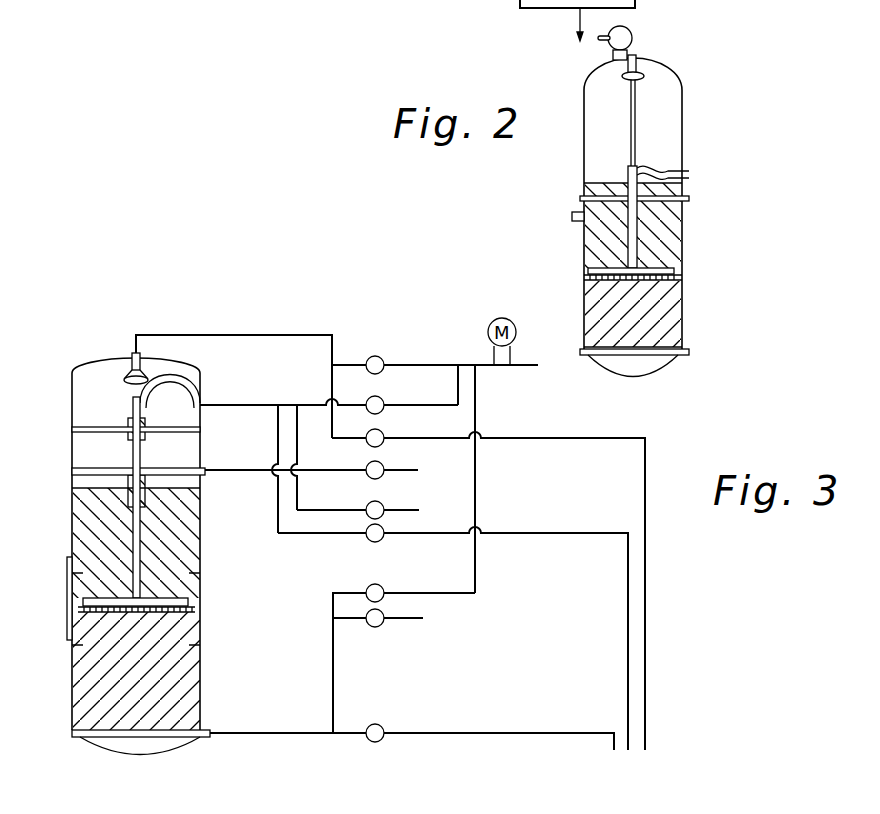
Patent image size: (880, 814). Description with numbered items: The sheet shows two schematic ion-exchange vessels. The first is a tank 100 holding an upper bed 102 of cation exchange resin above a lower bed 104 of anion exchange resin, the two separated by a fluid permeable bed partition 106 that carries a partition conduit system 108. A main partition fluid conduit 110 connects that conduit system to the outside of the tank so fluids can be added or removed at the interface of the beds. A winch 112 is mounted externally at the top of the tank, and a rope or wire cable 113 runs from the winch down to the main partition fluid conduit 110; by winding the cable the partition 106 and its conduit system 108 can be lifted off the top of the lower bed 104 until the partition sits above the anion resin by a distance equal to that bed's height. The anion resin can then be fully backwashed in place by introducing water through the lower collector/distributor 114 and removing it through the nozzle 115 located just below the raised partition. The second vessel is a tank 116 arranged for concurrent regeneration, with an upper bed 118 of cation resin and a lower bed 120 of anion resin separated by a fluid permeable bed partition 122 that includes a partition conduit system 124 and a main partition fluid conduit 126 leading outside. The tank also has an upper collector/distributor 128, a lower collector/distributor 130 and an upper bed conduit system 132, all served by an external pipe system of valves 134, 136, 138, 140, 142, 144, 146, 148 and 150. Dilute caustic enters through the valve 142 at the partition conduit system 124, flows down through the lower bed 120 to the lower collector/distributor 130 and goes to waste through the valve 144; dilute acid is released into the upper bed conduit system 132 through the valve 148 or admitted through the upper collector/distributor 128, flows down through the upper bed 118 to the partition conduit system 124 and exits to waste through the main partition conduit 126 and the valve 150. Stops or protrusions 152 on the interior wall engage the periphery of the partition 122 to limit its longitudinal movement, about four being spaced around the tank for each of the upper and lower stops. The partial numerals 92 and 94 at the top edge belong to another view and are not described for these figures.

In FIG. 2, the element 92 is at (334, 9).
In FIG. 2, the element 94 is at (378, 3).
In FIG. 2, the tank 100 is at (584, 143).
In FIG. 2, the upper bed 102 is at (595, 248).
In FIG. 2, the lower bed 104 is at (673, 327).
In FIG. 2, the fluid permeable bed partition 106 is at (662, 282).
In FIG. 2, the partition conduit system 108 is at (668, 267).
In FIG. 2, the main partition fluid conduit 110 is at (637, 232).
In FIG. 2, the winch 112 is at (630, 33).
In FIG. 2, the rope or wire cable 113 is at (636, 48).
In FIG. 2, the lower collector/distributor 114 is at (629, 357).
In FIG. 2, the nozzle 115 is at (572, 217).
In FIG. 3, the tank 116 is at (72, 440).
In FIG. 3, the upper bed 118 is at (80, 534).
In FIG. 3, the lower bed 120 is at (88, 708).
In FIG. 3, the fluid permeable bed partition 122 is at (148, 613).
In FIG. 3, the partition conduit system 124 is at (153, 598).
In FIG. 3, the main partition fluid conduit 126 is at (140, 543).
In FIG. 3, the upper collector/distributor 128 is at (131, 356).
In FIG. 3, the lower collector/distributor 130 is at (148, 738).
In FIG. 3, the upper bed conduit system 132 is at (172, 468).
In FIG. 3, the valve 134 is at (382, 358).
In FIG. 3, the valve 136 is at (380, 627).
In FIG. 3, the valve 138 is at (370, 586).
In FIG. 3, the valve 140 is at (382, 431).
In FIG. 3, the valve 142 is at (382, 503).
In FIG. 3, the valve 144 is at (382, 725).
In FIG. 3, the valve 146 is at (382, 398).
In FIG. 3, the valve 148 is at (382, 464).
In FIG. 3, the valve 150 is at (380, 542).
In FIG. 3, the stops or protrusions 152 is at (189, 573).